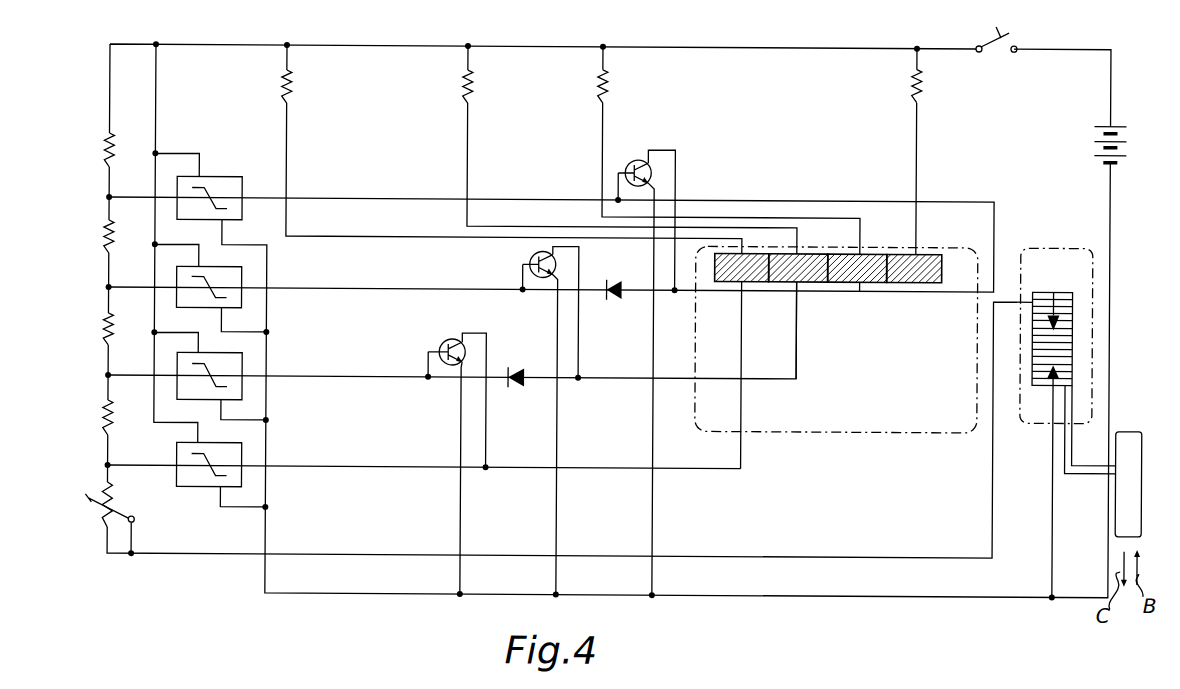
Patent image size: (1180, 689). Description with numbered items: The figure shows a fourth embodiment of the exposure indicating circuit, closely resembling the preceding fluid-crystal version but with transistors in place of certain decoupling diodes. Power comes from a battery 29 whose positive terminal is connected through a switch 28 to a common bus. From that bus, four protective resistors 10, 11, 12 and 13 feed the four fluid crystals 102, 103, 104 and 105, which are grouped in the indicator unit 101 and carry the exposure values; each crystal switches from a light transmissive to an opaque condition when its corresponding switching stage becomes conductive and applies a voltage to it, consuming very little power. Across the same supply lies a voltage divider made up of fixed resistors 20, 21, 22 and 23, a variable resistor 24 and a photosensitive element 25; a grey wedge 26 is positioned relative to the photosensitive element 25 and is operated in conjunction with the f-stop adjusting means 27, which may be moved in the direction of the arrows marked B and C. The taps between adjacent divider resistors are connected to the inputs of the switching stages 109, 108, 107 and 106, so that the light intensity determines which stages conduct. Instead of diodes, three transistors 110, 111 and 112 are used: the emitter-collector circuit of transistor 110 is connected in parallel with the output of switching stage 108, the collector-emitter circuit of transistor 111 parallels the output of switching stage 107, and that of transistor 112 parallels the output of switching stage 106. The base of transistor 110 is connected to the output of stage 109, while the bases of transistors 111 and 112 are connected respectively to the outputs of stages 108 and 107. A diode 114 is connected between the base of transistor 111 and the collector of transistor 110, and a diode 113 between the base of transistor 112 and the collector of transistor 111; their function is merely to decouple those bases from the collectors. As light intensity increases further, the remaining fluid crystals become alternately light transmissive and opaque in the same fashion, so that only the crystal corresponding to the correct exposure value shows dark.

The protective resistor 10 is at (293, 97).
The protective resistor 11 is at (463, 88).
The protective resistor 12 is at (598, 87).
The protective resistor 13 is at (911, 88).
The fixed resistor 20 is at (106, 150).
The fixed resistor 21 is at (106, 240).
The fixed resistor 22 is at (106, 328).
The fixed resistor 23 is at (107, 418).
The variable resistor 24 is at (108, 515).
The photosensitive element 25 is at (1070, 347).
The grey wedge 26 is at (1067, 322).
The f-stop adjusting means 27 is at (1137, 444).
The switch 28 is at (1015, 33).
The battery 29 is at (1090, 145).
The indicator unit 101 is at (854, 423).
The fluid crystal 102 is at (758, 278).
The fluid crystal 103 is at (816, 278).
The fluid crystal 104 is at (874, 278).
The fluid crystal 105 is at (929, 278).
The switching stage 106 is at (194, 480).
The switching stage 107 is at (246, 392).
The switching stage 108 is at (244, 299).
The switching stage 109 is at (235, 177).
The transistor 110 is at (641, 157).
The transistor 111 is at (531, 255).
The transistor 112 is at (442, 338).
The diode 113 is at (519, 388).
The diode 114 is at (615, 297).